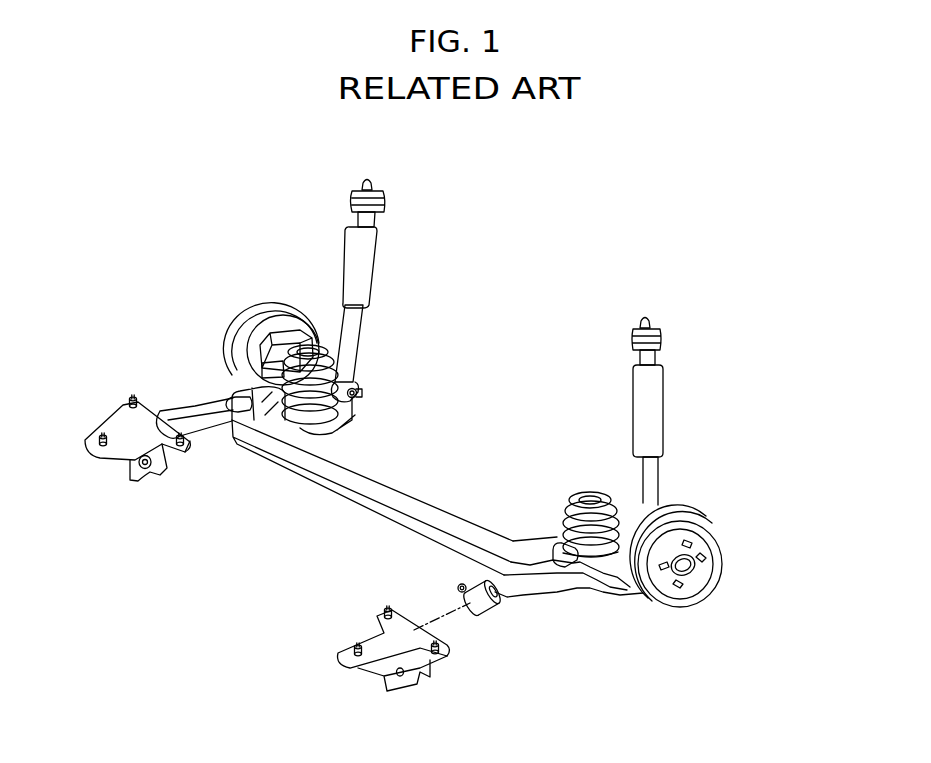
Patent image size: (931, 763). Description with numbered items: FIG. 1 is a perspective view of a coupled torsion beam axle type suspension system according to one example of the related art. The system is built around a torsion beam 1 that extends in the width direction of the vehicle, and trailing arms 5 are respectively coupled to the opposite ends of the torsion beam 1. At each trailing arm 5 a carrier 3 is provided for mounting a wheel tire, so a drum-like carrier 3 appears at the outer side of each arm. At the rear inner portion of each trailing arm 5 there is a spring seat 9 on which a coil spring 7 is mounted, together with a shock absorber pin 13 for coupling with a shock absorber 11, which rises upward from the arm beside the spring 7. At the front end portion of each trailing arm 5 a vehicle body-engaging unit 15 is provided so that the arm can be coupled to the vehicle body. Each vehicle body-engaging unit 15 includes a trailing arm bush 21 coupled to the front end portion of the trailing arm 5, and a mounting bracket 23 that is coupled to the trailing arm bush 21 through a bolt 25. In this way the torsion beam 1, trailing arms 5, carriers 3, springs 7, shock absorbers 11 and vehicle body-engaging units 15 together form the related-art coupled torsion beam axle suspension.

The torsion beam 1 is at (413, 502).
The carrier 3 is at (275, 297).
The trailing arm 5 is at (226, 405).
The spring 7 is at (340, 360).
The spring seat 9 is at (354, 424).
The shock absorber 11 is at (366, 262).
The shock absorber pin 13 is at (361, 393).
The vehicle body-engaging unit 15 is at (189, 482).
The trailing arm bush 21 is at (470, 598).
The mounting bracket 23 is at (126, 462).
The bolt 25 is at (148, 469).